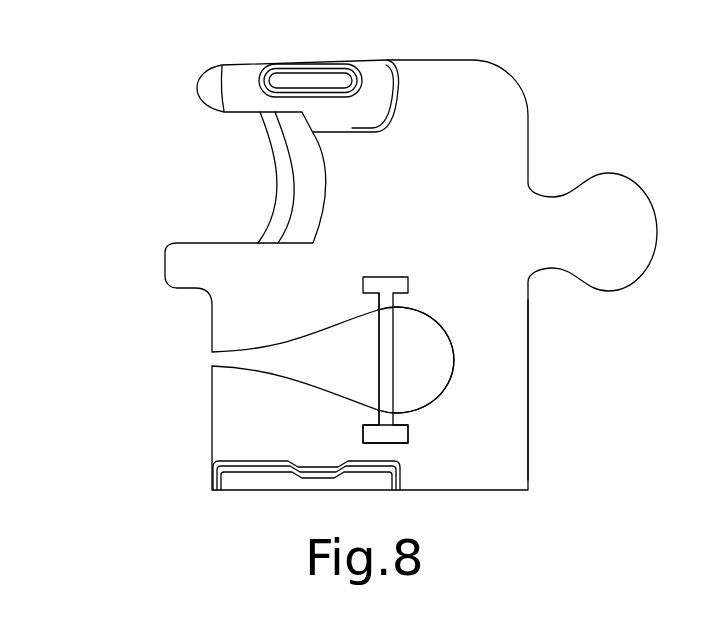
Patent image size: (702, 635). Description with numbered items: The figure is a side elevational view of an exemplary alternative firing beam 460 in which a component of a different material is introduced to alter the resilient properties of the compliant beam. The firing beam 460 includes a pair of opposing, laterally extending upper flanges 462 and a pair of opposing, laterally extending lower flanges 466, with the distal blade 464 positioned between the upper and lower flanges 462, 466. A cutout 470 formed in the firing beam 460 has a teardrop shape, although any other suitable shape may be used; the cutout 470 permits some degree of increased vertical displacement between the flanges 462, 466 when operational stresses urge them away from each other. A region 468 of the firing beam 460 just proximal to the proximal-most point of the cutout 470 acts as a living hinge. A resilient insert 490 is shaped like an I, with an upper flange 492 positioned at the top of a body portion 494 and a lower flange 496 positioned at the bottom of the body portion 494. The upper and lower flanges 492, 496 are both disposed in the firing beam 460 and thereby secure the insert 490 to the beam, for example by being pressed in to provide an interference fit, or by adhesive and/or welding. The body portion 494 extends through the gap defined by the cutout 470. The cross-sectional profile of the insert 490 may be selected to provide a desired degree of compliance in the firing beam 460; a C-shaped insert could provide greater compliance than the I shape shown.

The firing beam 460 is at (149, 152).
The upper flanges 462 is at (312, 82).
The distal blade 464 is at (278, 183).
The lower flanges 466 is at (270, 482).
The region 468 is at (495, 376).
The cutout 470 is at (212, 361).
The resilient insert 490 is at (395, 356).
The upper flange 492 is at (400, 282).
The body portion 494 is at (382, 377).
The lower flange 496 is at (373, 433).